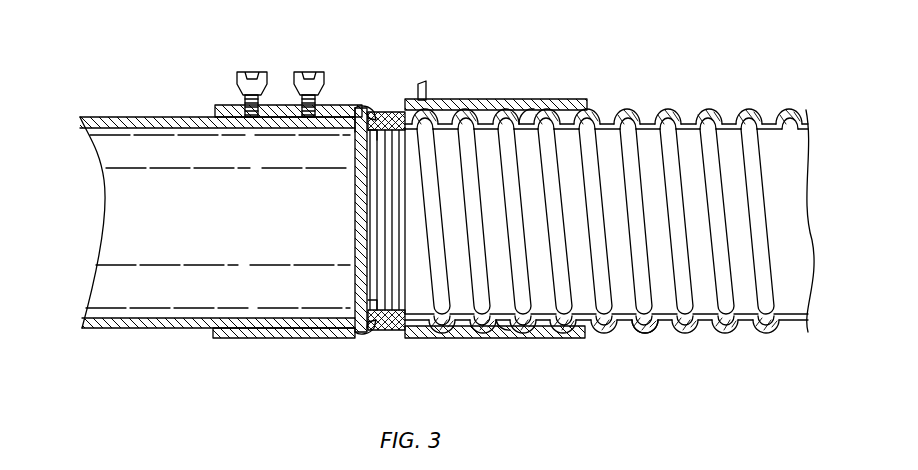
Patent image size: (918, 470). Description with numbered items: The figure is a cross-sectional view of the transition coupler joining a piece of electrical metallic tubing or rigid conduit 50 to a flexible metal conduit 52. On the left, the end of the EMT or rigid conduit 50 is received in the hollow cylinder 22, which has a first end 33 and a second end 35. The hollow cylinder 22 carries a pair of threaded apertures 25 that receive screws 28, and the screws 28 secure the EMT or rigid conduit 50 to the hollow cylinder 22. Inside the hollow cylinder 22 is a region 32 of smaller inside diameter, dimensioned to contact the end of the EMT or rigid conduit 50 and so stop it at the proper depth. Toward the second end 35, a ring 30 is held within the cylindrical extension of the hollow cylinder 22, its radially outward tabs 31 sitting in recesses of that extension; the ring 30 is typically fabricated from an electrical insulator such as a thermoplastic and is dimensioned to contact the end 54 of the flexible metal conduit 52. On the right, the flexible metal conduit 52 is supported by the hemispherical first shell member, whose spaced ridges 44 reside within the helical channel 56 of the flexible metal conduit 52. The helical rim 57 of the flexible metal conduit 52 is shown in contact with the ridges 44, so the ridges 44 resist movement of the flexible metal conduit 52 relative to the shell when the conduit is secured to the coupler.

The electrical metallic tubing or rigid conduit 50 is at (128, 108).
The first end 33 is at (215, 106).
The screws 28 is at (298, 74).
The threaded apertures 25 is at (357, 108).
The region 32 is at (366, 108).
The ring 30 is at (365, 128).
The end 54 is at (370, 200).
The tabs 31 is at (386, 336).
The hollow cylinder 22 is at (245, 338).
The second end 35 is at (420, 100).
The flexible metal conduit 52 is at (684, 98).
The ridges 44 is at (516, 100).
The helical channel 56 is at (527, 110).
The helical rim 57 is at (644, 331).